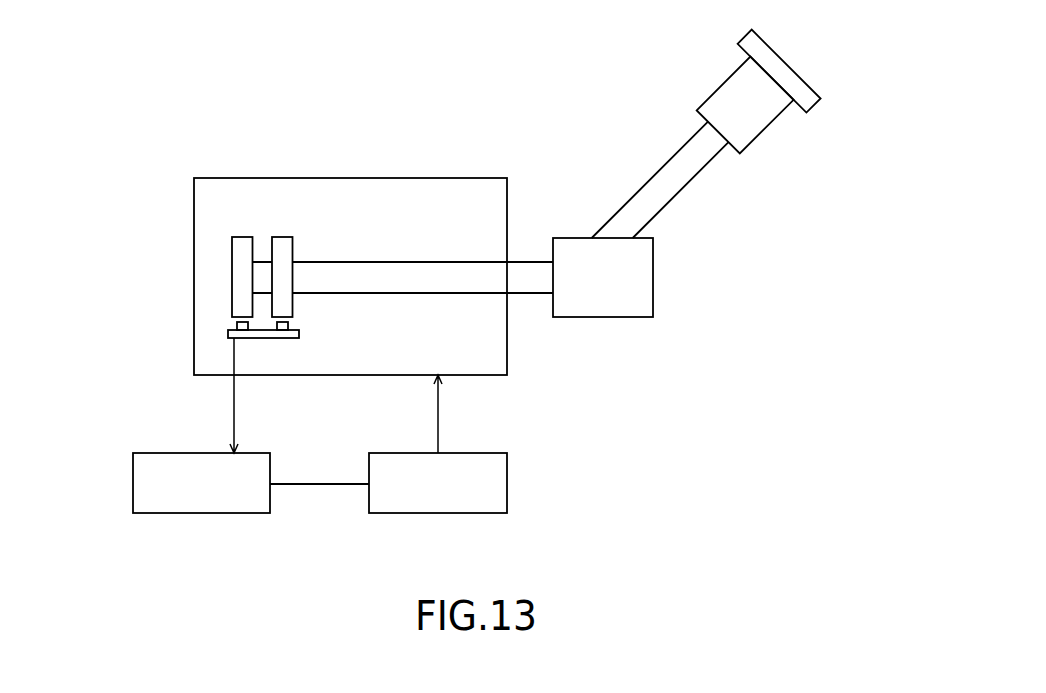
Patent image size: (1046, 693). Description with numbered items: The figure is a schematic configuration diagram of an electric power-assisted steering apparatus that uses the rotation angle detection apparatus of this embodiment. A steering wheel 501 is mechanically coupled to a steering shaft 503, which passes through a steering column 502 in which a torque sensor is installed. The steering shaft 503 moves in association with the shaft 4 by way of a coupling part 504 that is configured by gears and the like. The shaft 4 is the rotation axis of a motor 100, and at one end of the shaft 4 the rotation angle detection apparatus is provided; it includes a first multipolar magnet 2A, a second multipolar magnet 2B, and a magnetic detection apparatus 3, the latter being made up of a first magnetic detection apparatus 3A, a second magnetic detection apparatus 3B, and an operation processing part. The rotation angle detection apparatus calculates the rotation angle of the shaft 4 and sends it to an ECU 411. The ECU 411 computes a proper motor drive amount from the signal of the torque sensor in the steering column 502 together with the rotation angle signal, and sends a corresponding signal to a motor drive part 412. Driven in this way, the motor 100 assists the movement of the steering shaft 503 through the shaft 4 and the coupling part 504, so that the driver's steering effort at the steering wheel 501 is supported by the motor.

The motor 100 is at (397, 178).
The first multipolar magnet 2A is at (283, 240).
The second multipolar magnet 2B is at (242, 240).
The magnetic detection apparatus 3 is at (262, 342).
The first magnetic detection apparatus 3A is at (297, 329).
The second magnetic detection apparatus 3B is at (237, 327).
The shaft 4 is at (523, 293).
The ECU 411 is at (142, 487).
The motor drive part 412 is at (503, 492).
The steering wheel 501 is at (787, 70).
The steering column 502 is at (757, 118).
The steering shaft 503 is at (682, 166).
The coupling part 504 is at (640, 290).